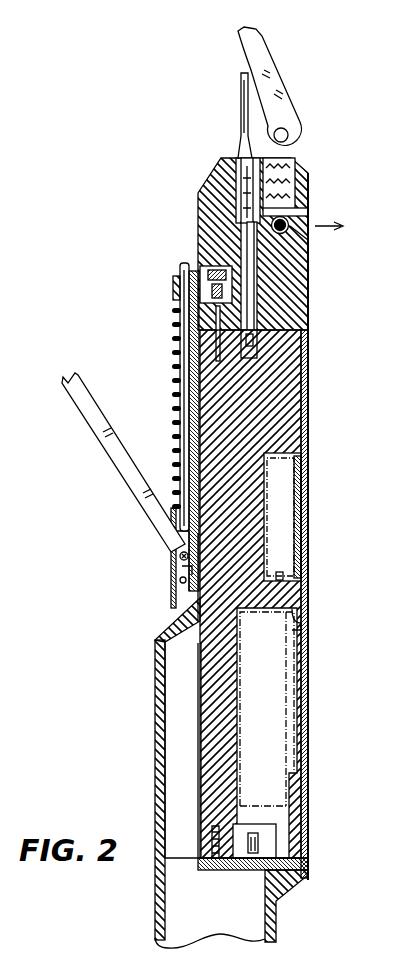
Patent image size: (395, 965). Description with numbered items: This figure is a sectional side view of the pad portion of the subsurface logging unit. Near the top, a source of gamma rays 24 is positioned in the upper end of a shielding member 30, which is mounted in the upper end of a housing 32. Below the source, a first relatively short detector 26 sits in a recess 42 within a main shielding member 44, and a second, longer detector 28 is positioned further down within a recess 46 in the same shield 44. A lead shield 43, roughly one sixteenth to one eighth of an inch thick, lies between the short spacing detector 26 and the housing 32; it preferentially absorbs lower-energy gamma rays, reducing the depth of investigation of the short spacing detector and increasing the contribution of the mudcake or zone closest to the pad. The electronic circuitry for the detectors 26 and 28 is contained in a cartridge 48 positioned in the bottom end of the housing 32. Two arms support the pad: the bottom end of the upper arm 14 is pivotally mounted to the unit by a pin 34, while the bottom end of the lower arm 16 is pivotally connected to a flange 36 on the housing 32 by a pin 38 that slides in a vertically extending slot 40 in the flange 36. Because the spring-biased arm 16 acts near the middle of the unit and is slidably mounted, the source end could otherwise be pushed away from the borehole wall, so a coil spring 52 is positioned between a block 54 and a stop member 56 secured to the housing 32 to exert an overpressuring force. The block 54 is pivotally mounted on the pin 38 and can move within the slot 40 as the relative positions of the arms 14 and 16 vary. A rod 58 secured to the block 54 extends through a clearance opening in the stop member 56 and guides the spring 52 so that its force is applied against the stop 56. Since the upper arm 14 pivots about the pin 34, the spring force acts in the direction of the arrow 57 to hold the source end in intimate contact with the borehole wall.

The arm 14 is at (262, 62).
The arm 16 is at (110, 450).
The source of gamma rays 24 is at (299, 208).
The first relatively short detector 26 is at (301, 441).
The second, longer detector 28 is at (283, 702).
The shielding member 30 is at (288, 267).
The housing 32 is at (300, 353).
The pin 34 is at (280, 126).
The flange 36 is at (166, 598).
The pin 38 is at (176, 562).
The vertically extending slot 40 is at (172, 572).
The recess 42 is at (288, 569).
The lead shield 43 is at (292, 500).
The main shielding member 44 is at (283, 411).
The recess 46 is at (300, 616).
The cartridge 48 is at (176, 893).
The coil spring 52 is at (165, 377).
The block 54 is at (172, 547).
The stop member 56 is at (166, 273).
The arrow 57 is at (320, 220).
The rod 58 is at (172, 337).